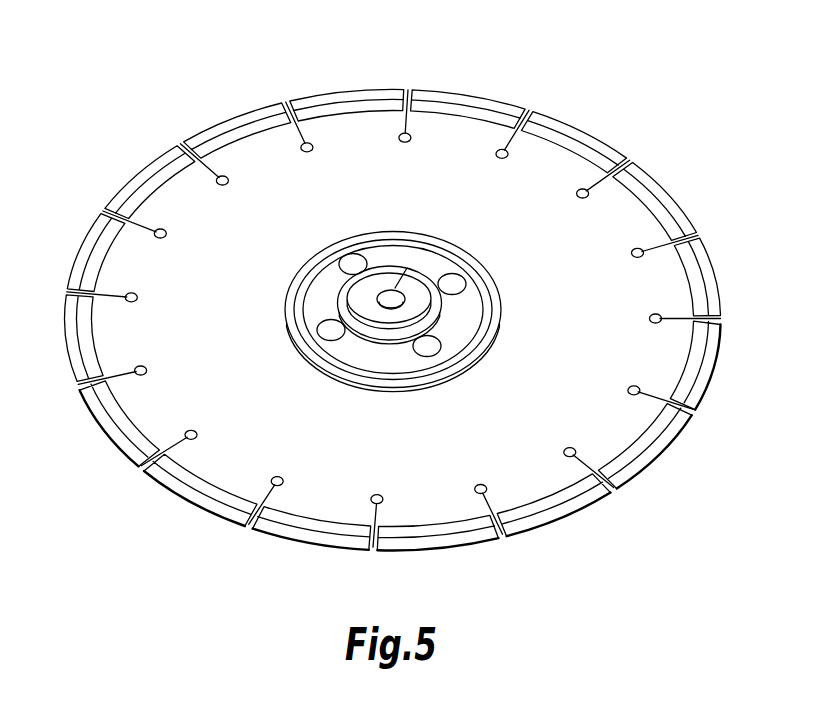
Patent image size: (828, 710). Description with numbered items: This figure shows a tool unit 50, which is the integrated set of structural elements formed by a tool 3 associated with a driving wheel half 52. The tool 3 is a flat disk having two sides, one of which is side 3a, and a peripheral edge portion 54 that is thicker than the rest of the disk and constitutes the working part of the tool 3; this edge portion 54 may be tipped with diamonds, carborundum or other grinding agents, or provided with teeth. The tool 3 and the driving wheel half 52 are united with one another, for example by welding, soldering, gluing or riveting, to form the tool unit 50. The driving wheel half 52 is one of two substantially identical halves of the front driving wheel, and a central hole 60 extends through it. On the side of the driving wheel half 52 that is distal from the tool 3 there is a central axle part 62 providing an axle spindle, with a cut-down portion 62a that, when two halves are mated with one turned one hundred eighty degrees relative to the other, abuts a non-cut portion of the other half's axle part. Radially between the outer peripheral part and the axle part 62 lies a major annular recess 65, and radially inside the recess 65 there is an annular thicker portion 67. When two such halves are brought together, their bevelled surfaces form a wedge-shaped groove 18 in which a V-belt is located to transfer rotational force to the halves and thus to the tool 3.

The tool unit 50 is at (334, 90).
The tool 3 is at (572, 128).
The side of the tool 3a is at (462, 132).
The peripheral edge portion 54 is at (302, 540).
The wedge-shaped groove 18 is at (462, 353).
The driving wheel half 52 is at (480, 262).
The annular recess 65 is at (458, 318).
The cut-down portion 62a is at (360, 295).
The central axle part 62 is at (417, 284).
The central hole 60 is at (392, 290).
The annular thicker portion 67 is at (392, 309).